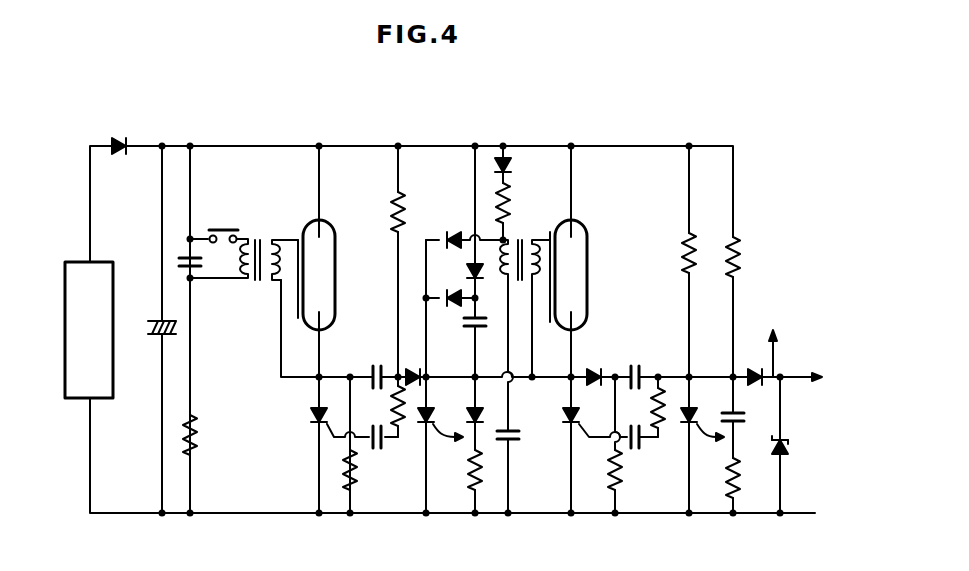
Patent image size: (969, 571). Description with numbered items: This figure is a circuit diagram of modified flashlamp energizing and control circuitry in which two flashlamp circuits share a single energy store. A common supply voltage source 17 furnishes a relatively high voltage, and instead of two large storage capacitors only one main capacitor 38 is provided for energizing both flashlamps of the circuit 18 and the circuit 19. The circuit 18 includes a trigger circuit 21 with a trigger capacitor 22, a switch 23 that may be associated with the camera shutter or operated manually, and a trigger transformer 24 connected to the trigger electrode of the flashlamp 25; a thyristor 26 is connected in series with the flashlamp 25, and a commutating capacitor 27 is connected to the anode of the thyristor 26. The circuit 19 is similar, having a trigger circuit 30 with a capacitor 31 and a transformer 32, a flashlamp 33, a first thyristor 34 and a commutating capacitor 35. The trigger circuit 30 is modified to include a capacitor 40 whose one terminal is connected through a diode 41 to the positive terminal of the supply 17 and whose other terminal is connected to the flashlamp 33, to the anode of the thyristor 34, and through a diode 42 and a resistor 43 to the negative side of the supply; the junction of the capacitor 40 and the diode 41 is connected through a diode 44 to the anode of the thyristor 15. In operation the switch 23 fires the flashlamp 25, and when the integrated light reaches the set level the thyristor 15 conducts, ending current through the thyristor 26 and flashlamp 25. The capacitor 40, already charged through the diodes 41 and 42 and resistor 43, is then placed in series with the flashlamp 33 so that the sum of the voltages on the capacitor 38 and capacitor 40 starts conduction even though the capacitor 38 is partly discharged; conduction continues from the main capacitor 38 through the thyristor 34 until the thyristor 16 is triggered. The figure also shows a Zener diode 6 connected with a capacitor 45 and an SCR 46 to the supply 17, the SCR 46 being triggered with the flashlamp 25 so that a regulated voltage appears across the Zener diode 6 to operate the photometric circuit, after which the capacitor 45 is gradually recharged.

The Zener diode 6 is at (786, 443).
The thyristor 15 is at (420, 430).
The thyristor 16 is at (695, 411).
The supply voltage source 17 is at (113, 272).
The circuit 18 is at (293, 137).
The circuit 19 is at (525, 137).
The trigger circuit 21 is at (216, 313).
The trigger capacitor 22 is at (186, 266).
The switch 23 is at (226, 228).
The trigger transformer 24 is at (272, 282).
The flashlamp 25 is at (320, 285).
The thyristor 26 is at (311, 418).
The commutating capacitor 27 is at (376, 366).
The trigger circuit 30 is at (529, 236).
The capacitor 31 is at (513, 434).
The transformer 32 is at (517, 276).
The flashlamp 33 is at (574, 264).
The first thyristor 34 is at (568, 427).
The commutating capacitor 35 is at (634, 366).
The main capacitor 38 is at (152, 336).
The capacitor 40 is at (486, 325).
The diode 41 is at (467, 278).
The diode 42 is at (467, 419).
The resistor 43 is at (468, 466).
The diode 44 is at (458, 304).
The capacitor 45 is at (738, 428).
The SCR 46 is at (762, 374).